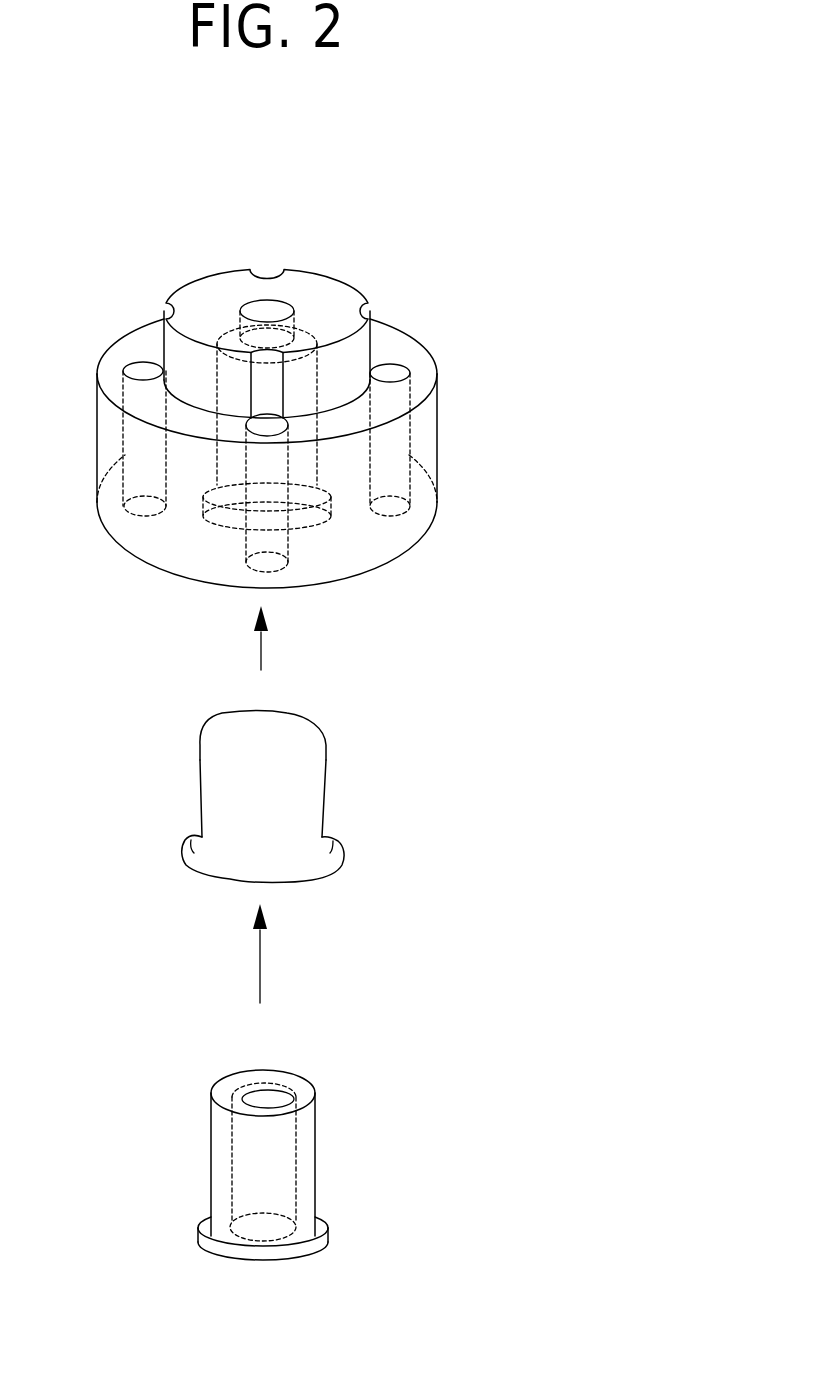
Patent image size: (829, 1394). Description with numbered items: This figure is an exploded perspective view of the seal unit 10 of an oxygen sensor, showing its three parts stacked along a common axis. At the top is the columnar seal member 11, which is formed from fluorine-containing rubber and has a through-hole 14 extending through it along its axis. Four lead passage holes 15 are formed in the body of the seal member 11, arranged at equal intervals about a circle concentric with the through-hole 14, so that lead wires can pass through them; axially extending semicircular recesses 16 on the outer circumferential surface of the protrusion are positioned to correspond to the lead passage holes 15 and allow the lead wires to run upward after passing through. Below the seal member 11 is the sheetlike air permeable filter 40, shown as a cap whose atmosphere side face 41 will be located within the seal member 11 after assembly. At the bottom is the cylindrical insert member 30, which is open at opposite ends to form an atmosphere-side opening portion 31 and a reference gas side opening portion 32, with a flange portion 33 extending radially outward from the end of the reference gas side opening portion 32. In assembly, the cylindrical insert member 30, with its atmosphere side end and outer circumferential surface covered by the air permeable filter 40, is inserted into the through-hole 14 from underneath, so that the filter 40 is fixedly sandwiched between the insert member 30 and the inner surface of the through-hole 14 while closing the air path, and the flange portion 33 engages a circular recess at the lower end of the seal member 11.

The seal unit 10 is at (560, 268).
The seal member 11 is at (320, 232).
The through-hole 14 is at (203, 516).
The lead passage holes 15 is at (134, 366).
The semicircular recesses 16 is at (264, 272).
The cylindrical insert member 30 is at (315, 1118).
The atmosphere-side opening portion 31 is at (264, 1093).
The reference gas side opening portion 32 is at (250, 1240).
The flange portion 33 is at (327, 1228).
The air permeable filter 40 is at (323, 778).
The atmosphere side face 41 is at (291, 724).